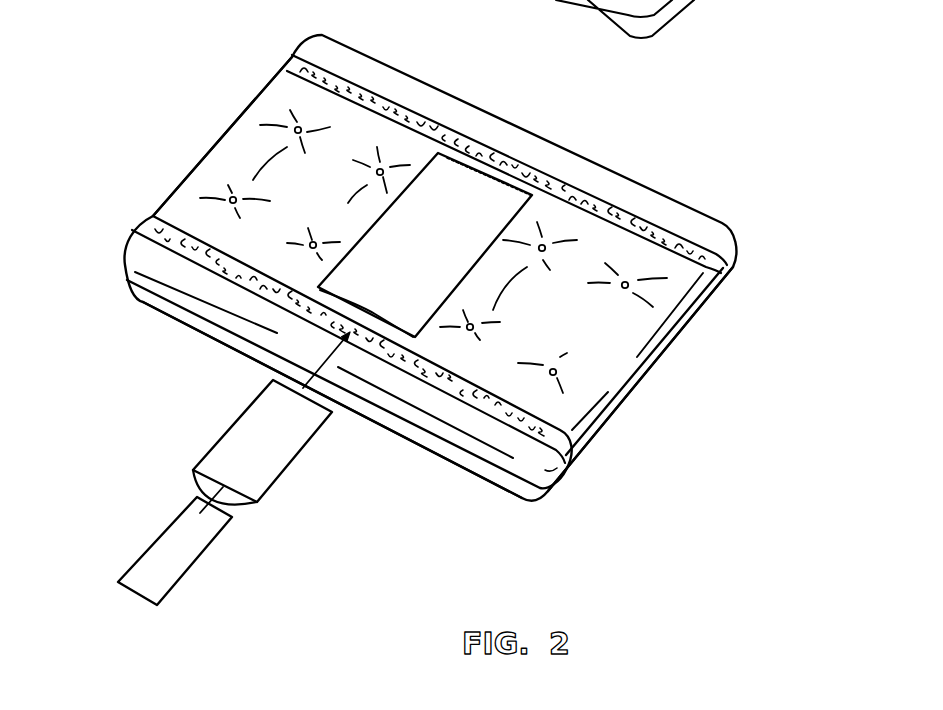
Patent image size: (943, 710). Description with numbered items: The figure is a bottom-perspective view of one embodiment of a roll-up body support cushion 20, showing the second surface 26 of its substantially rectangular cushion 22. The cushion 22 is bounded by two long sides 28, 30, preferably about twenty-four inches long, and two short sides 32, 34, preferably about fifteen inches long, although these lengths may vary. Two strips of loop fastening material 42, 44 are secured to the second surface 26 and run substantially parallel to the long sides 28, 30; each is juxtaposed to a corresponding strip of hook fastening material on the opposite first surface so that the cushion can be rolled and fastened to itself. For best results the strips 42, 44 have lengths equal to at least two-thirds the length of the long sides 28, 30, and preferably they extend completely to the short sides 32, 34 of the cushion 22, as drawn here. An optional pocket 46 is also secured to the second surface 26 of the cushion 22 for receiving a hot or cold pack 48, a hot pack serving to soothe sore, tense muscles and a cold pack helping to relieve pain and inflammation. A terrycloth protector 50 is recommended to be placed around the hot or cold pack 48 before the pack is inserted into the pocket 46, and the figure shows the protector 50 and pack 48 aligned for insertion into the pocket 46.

The roll-up body support cushion 20 is at (806, 187).
The cushion 22 is at (647, 181).
The second surface 26 is at (230, 157).
The long side 28 is at (443, 440).
The long side 30 is at (560, 148).
The short side 32 is at (268, 101).
The short side 34 is at (633, 390).
The strip of loop fastening material 42 is at (373, 90).
The strip of loop fastening material 44 is at (220, 262).
The pocket 46 is at (450, 190).
The hot or cold pack 48 is at (185, 553).
The terrycloth protector 50 is at (270, 455).